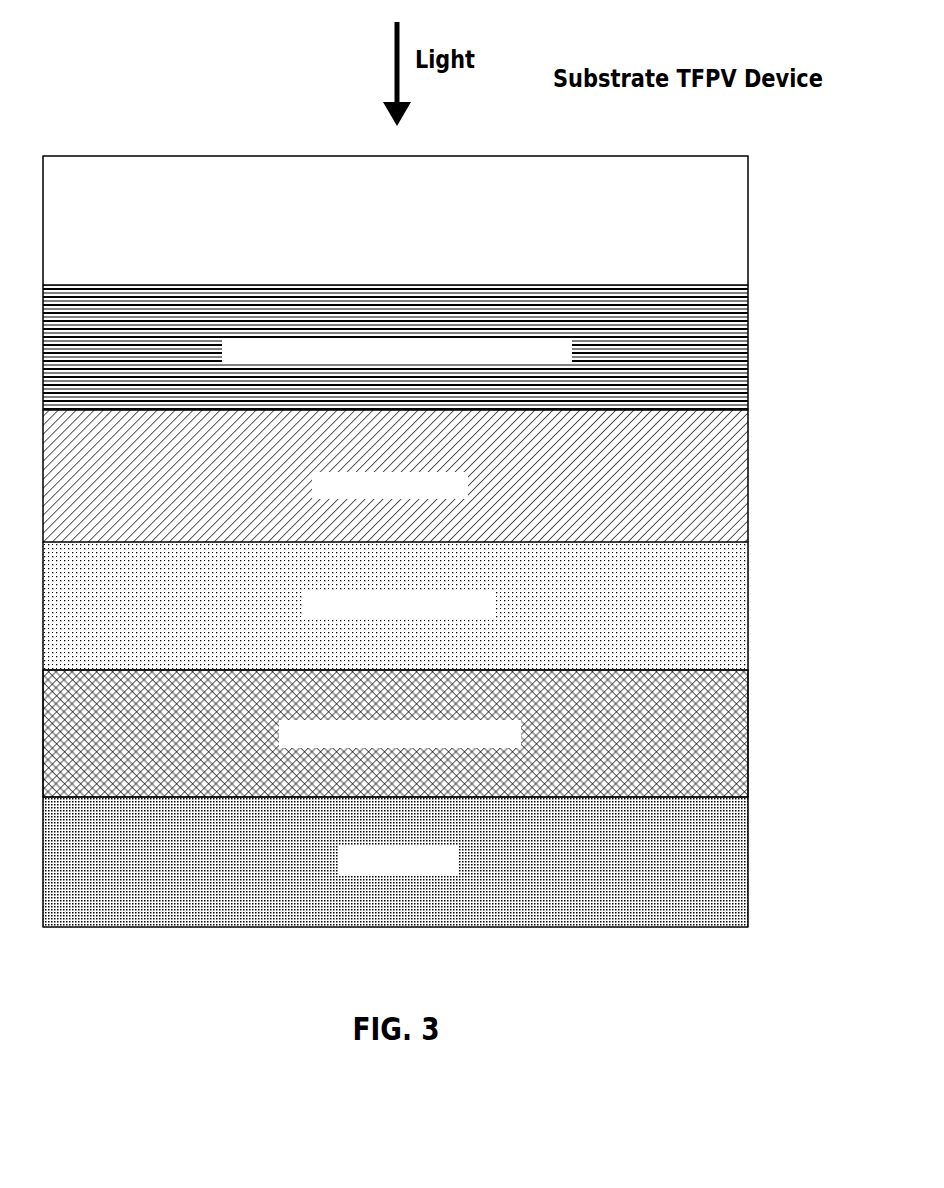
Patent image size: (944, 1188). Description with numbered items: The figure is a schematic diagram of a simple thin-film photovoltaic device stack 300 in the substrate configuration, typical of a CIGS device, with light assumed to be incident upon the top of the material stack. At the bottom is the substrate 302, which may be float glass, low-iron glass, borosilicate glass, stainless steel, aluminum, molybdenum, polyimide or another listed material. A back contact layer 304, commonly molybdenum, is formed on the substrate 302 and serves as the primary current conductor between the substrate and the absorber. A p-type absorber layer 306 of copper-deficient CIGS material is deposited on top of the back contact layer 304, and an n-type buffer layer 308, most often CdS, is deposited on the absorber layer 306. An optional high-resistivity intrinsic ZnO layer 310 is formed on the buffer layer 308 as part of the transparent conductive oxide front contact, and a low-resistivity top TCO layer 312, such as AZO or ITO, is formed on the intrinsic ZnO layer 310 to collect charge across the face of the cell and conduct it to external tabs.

The substrate TFPV device stack 300 is at (302, 82).
The substrate 302 is at (762, 893).
The back contact layer 304 is at (762, 765).
The p-type absorber layer 306 is at (762, 638).
The n-type buffer layer 308 is at (762, 510).
The intrinsic ZnO layer 310 is at (762, 380).
The top TCO layer 312 is at (762, 253).